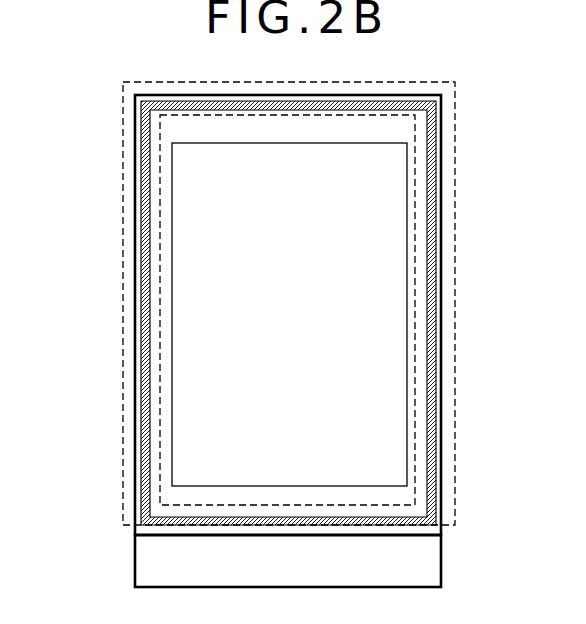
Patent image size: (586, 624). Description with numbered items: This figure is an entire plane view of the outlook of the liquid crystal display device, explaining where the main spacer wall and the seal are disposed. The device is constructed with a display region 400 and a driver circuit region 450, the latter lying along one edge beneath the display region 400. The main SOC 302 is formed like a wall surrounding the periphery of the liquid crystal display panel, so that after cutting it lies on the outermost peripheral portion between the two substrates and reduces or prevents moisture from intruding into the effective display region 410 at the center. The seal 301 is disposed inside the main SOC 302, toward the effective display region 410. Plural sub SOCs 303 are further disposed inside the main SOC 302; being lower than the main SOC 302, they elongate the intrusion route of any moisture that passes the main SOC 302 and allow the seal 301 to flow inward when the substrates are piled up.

The display region 400 is at (97, 92).
The seal 301 is at (415, 115).
The main SOC 302 is at (453, 149).
The sub SOC 303 is at (433, 191).
The effective display region 410 is at (409, 302).
The driver circuit region 450 is at (98, 537).